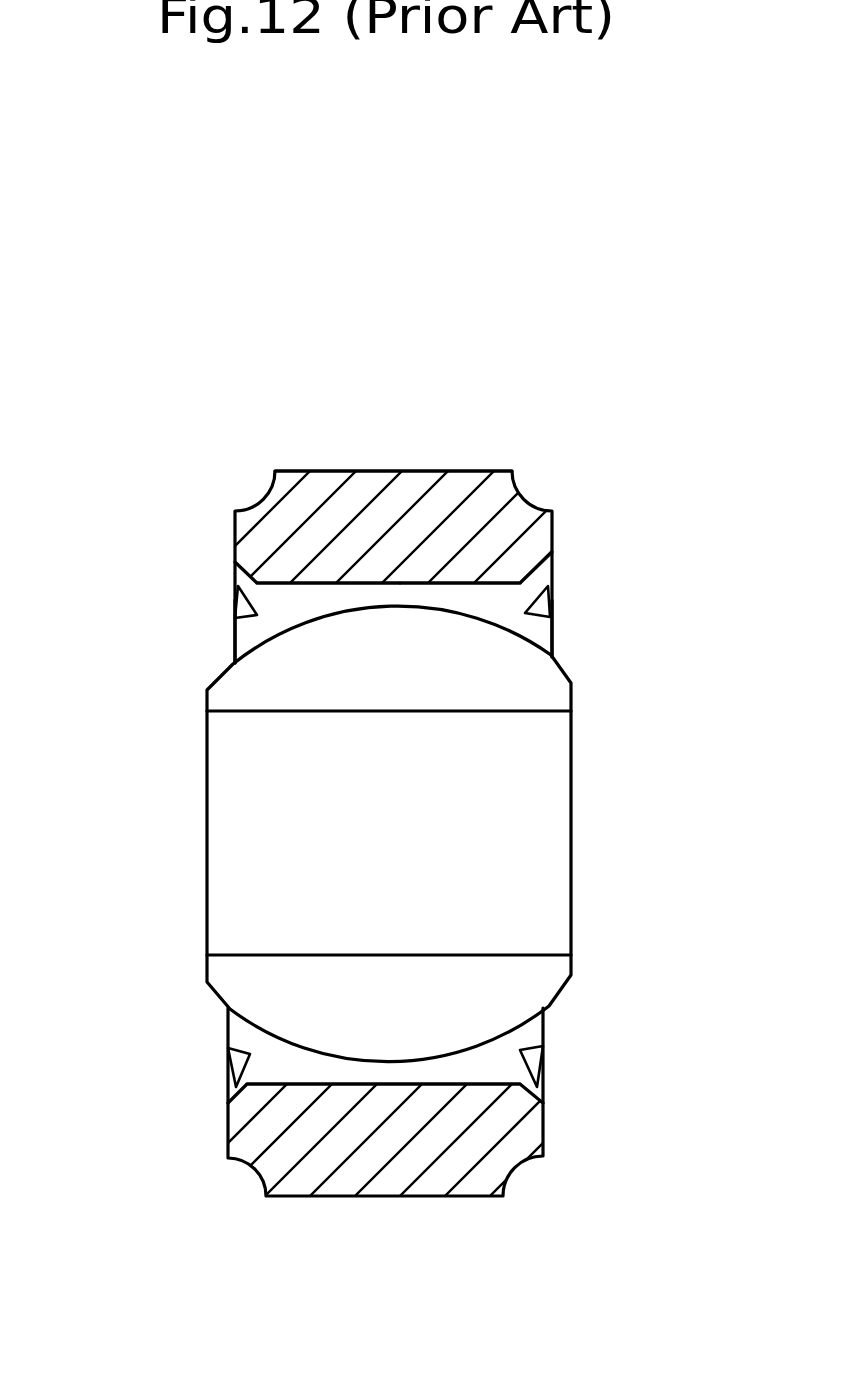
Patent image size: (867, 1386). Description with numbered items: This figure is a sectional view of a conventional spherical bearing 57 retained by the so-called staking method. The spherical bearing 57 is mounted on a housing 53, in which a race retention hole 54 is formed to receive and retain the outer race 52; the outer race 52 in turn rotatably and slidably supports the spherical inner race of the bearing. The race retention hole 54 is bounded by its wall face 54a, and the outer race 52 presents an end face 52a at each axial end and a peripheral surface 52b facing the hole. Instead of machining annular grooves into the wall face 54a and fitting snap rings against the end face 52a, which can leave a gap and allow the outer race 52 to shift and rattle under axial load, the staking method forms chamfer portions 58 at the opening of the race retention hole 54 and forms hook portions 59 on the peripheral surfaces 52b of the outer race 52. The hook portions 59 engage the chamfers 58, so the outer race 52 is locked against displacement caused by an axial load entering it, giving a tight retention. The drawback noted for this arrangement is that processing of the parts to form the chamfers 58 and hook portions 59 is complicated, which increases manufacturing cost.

The outer race 52 is at (570, 1012).
The end face of the outer race 52a is at (233, 642).
The peripheral surface of the outer race 52b is at (312, 1084).
The housing 53 is at (480, 442).
The race retention hole 54 is at (341, 605).
The wall face of the race retention hole 54a is at (450, 585).
The spherical bearing 57 is at (338, 399).
The chamfer portion 58 is at (232, 590).
The hook portion 59 is at (227, 1068).